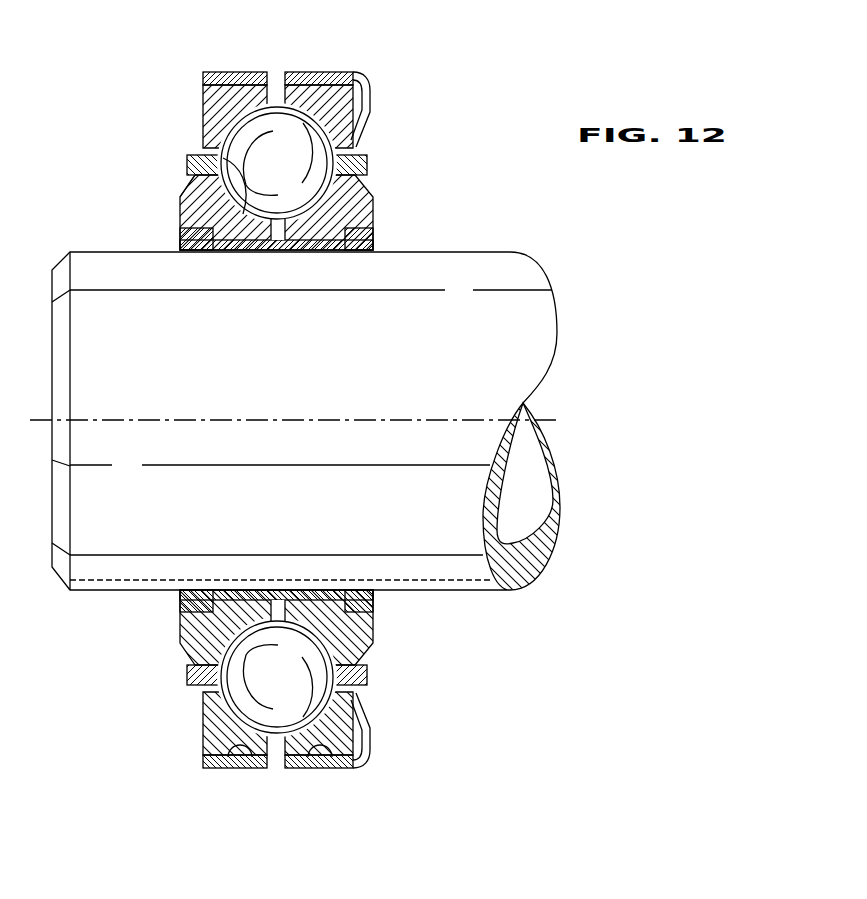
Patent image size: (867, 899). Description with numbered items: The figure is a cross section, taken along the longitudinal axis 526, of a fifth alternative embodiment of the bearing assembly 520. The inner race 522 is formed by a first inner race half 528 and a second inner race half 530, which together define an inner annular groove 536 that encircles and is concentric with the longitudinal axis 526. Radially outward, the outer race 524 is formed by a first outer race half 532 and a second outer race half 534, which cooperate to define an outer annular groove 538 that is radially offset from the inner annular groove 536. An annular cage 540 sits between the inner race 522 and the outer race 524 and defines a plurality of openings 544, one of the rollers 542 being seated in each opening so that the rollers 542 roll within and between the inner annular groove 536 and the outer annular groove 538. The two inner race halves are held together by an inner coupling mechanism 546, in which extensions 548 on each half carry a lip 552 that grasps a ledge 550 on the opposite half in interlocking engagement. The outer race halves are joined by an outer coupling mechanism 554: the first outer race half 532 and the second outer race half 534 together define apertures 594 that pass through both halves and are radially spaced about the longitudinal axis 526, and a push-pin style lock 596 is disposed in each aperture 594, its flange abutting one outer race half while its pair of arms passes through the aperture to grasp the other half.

The bearing assembly 520 is at (383, 58).
The inner race 522 is at (380, 208).
The outer race 524 is at (203, 105).
The longitudinal axis 526 is at (410, 412).
The first inner race half 528 is at (352, 232).
The second inner race half 530 is at (192, 197).
The first outer race half 532 is at (333, 110).
The second outer race half 534 is at (212, 97).
The inner annular groove 536 is at (255, 209).
The outer annular groove 538 is at (250, 119).
The annular cage 540 is at (367, 165).
The rollers 542 is at (277, 165).
The openings 544 is at (190, 212).
The inner coupling mechanism 546 is at (227, 588).
The extensions 548 is at (297, 597).
The ledge 550 is at (212, 627).
The lip 552 is at (182, 597).
The outer coupling mechanism 554 is at (363, 768).
The apertures 594 is at (252, 765).
The locks 596 is at (370, 740).